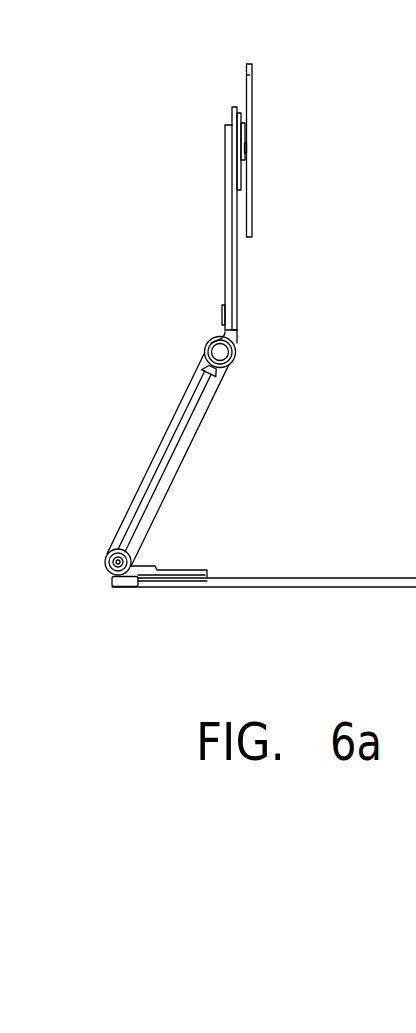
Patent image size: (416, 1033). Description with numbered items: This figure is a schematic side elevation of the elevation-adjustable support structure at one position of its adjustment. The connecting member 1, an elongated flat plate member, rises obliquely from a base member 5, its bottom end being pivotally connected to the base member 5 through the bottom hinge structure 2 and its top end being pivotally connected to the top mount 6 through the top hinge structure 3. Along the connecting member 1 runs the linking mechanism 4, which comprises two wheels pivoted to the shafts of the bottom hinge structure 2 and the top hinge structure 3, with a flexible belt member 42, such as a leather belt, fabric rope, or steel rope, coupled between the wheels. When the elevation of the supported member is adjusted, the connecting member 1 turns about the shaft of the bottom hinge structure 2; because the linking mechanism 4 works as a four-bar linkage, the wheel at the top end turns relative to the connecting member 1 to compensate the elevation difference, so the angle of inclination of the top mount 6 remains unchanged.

The connecting member 1 is at (173, 459).
The bottom hinge structure 2 is at (100, 556).
The top hinge structure 3 is at (203, 332).
The linking mechanism 4 is at (166, 428).
The flexible belt member 42 is at (166, 495).
The base member 5 is at (329, 578).
The top mount 6 is at (227, 236).